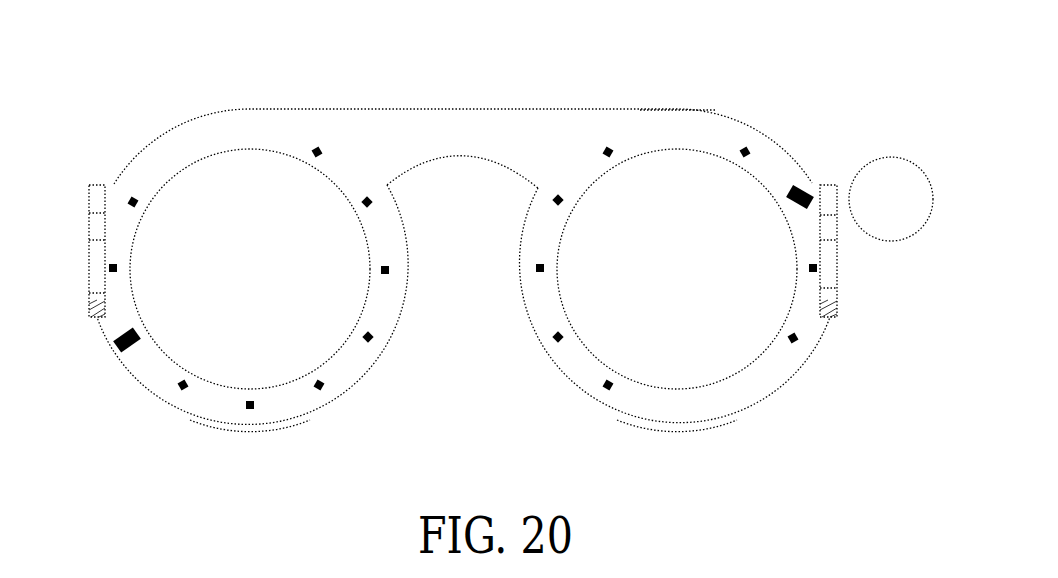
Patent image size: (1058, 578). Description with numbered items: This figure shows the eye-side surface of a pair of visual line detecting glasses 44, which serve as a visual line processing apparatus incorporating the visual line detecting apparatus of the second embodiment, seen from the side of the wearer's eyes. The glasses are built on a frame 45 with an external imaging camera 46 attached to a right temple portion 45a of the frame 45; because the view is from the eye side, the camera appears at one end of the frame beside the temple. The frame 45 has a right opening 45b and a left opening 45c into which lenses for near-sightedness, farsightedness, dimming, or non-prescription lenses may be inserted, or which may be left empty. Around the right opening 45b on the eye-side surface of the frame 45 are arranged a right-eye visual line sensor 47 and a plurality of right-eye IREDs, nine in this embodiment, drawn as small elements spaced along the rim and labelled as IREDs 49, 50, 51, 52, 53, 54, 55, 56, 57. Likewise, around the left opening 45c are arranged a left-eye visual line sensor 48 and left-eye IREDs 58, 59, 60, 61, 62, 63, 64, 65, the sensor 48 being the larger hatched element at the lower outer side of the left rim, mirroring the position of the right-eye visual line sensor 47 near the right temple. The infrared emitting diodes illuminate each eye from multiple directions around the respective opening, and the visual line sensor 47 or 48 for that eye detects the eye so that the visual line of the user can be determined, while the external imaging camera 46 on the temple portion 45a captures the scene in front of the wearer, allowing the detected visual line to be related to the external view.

The visual line detecting glasses 44 is at (485, 84).
The frame 45 is at (243, 127).
The right temple portion 45a is at (840, 250).
The right opening 45b is at (686, 392).
The left opening 45c is at (294, 380).
The external imaging camera 46 is at (892, 180).
The right-eye visual line sensor 47 is at (803, 185).
The left-eye visual line sensor 48 is at (125, 351).
The right-eye IRED 49 is at (607, 390).
The right-eye IRED 50 is at (557, 338).
The right-eye IRED 51 is at (538, 268).
The right-eye IRED 52 is at (556, 198).
The right-eye IRED 53 is at (608, 150).
The right-eye IRED 54 is at (682, 130).
The right-eye IRED 55 is at (745, 152).
The right-eye IRED 56 is at (818, 268).
The right-eye IRED 57 is at (794, 343).
The left-eye IRED 58 is at (319, 150).
The left-eye IRED 59 is at (368, 200).
The left-eye IRED 60 is at (386, 276).
The left-eye IRED 61 is at (368, 345).
The left-eye IRED 62 is at (320, 392).
The left-eye IRED 63 is at (250, 412).
The left-eye IRED 64 is at (183, 392).
The left-eye IRED 65 is at (133, 198).